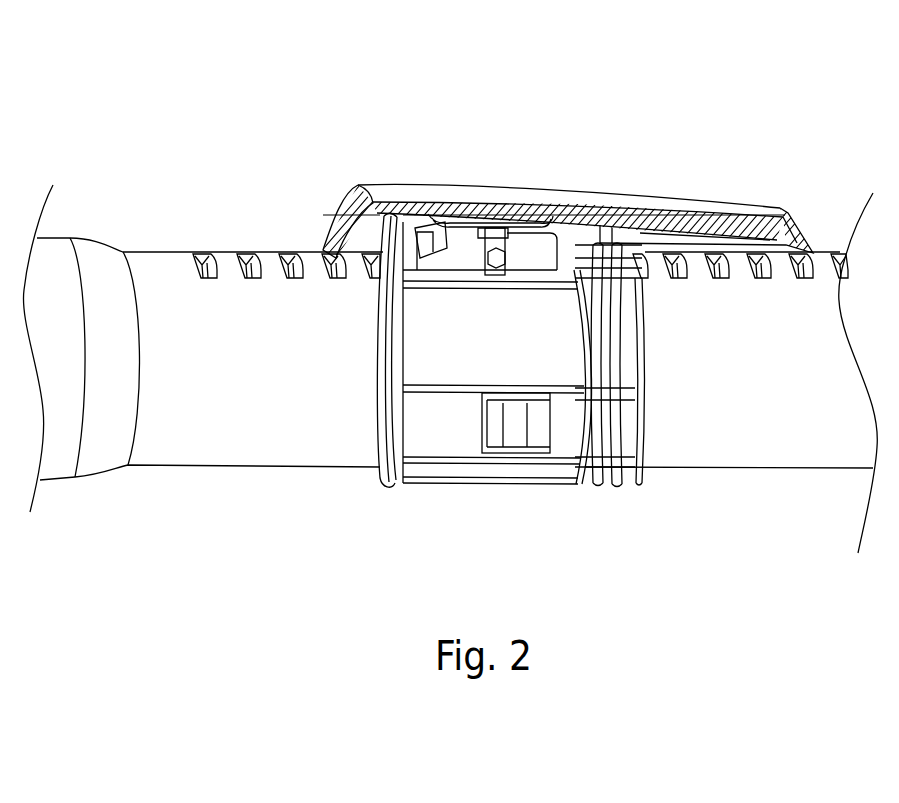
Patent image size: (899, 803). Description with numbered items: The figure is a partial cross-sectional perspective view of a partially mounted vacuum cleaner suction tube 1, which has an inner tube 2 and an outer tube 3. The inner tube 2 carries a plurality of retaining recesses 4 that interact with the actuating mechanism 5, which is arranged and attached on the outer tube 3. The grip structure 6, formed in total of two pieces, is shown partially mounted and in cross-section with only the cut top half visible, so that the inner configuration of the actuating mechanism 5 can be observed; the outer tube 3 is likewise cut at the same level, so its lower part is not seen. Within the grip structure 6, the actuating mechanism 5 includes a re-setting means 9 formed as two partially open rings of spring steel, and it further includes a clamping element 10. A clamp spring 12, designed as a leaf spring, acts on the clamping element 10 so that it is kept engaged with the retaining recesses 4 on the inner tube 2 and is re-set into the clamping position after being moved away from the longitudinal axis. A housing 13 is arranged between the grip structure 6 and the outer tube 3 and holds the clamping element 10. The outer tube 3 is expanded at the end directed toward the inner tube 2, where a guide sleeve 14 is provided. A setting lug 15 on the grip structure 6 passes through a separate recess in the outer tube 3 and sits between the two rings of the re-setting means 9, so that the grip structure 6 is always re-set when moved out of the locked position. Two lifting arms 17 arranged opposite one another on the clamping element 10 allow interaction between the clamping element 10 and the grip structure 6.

The vacuum cleaner suction tube 1 is at (262, 574).
The inner tube 2 is at (162, 267).
The outer tube 3 is at (828, 257).
The retaining recesses 4 is at (203, 252).
The actuating mechanism 5 is at (714, 155).
The grip structure 6 is at (423, 193).
The re-setting means 9 is at (618, 483).
The clamping element 10 is at (498, 238).
The clamp spring 12 is at (490, 213).
The housing 13 is at (537, 257).
The guide sleeve 14 is at (430, 442).
The setting lug 15 is at (640, 224).
The lifting arms 17 is at (502, 258).